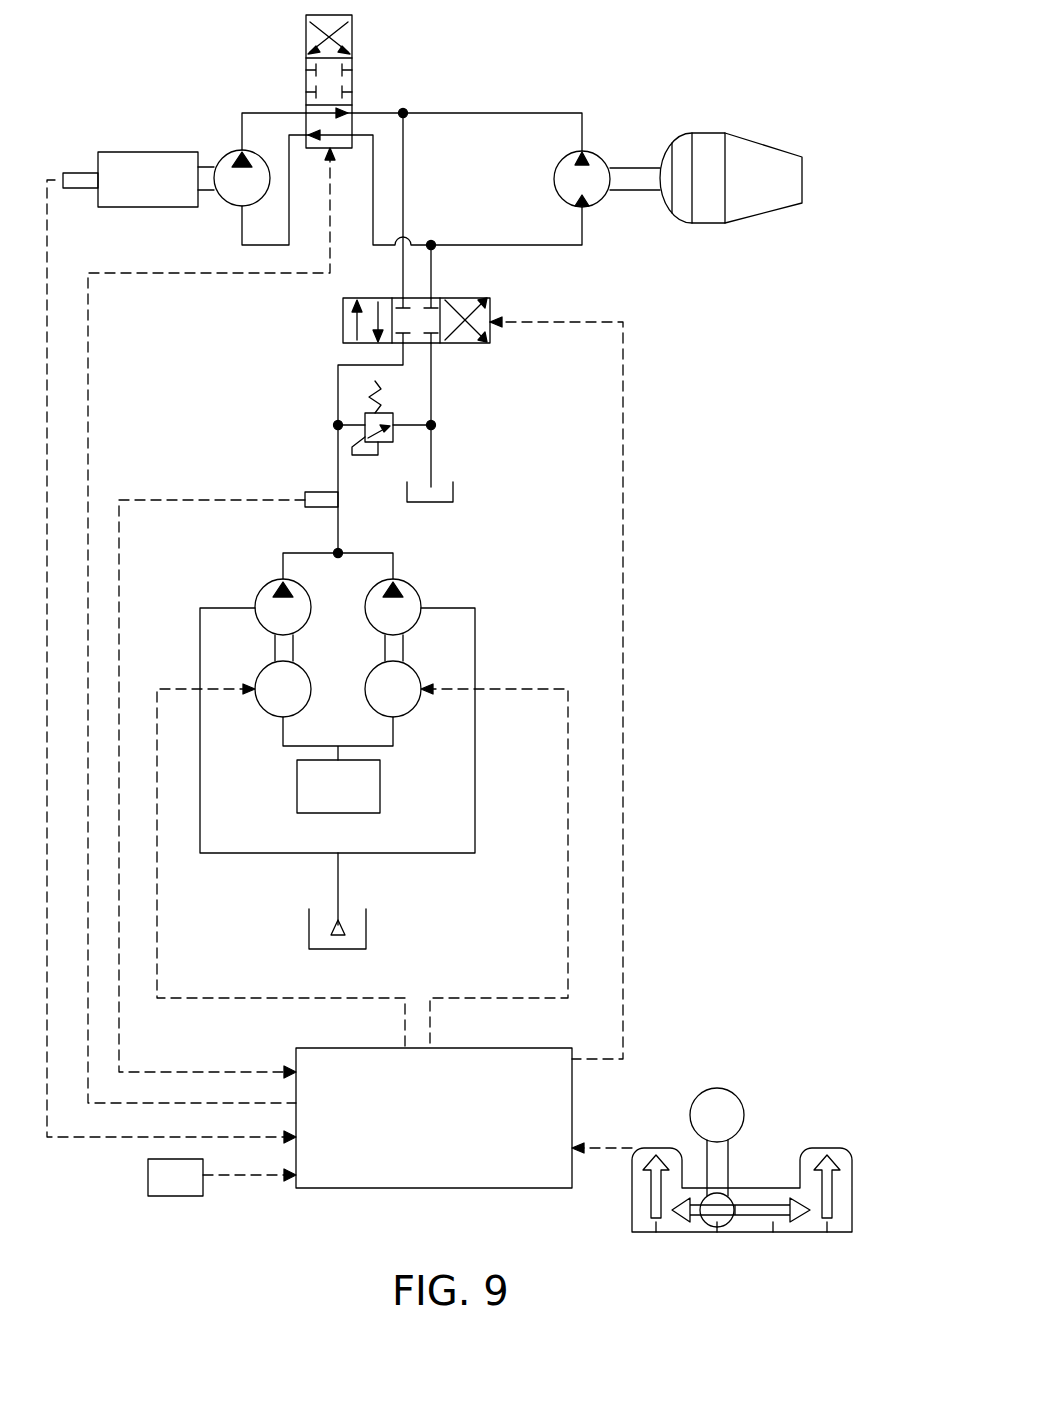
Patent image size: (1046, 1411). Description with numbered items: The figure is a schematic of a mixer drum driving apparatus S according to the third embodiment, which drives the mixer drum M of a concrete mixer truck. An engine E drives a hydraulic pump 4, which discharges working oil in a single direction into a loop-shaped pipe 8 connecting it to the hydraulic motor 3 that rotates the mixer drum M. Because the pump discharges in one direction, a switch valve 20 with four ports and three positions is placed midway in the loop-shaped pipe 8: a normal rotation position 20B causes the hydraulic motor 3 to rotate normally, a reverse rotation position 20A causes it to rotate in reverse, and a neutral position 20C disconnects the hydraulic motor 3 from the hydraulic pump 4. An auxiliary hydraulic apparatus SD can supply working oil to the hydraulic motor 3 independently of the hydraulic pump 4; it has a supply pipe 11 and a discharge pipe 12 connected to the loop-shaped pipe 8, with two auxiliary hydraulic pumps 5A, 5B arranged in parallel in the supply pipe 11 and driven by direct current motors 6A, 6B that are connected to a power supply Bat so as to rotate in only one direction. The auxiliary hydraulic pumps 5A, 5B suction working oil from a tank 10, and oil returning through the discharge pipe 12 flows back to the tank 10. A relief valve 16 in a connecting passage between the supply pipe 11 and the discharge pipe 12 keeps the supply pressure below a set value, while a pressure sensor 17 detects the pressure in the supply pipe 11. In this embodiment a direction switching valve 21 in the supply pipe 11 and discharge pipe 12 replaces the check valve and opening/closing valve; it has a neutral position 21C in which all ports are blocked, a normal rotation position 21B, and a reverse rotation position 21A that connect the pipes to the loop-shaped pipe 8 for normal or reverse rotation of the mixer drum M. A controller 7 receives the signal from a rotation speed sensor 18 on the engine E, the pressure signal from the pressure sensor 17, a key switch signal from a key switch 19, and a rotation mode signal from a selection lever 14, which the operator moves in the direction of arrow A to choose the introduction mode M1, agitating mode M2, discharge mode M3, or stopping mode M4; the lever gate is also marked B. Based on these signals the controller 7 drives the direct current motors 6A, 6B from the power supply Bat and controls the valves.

The rotation speed sensor 18 is at (83, 165).
The engine E is at (152, 152).
The hydraulic pump 4 is at (223, 205).
The mixer drum driving apparatus S is at (210, 95).
The loop-shaped pipe 8 is at (520, 113).
The switch valve 20 is at (387, 75).
The reverse rotation position 20A is at (352, 36).
The normal rotation position 20B is at (352, 120).
The neutral position 20C is at (352, 80).
The hydraulic motor 3 is at (595, 168).
The mixer drum M is at (755, 135).
The direction switching valve 21 is at (414, 321).
The reverse rotation position 21A is at (485, 343).
The normal rotation position 21B is at (343, 330).
The neutral position 21C is at (420, 343).
The supply pipe 11 is at (338, 400).
The discharge pipe 12 is at (431, 408).
The relief valve 16 is at (385, 413).
The tank 10 is at (453, 495).
The pressure sensor 17 is at (305, 495).
The auxiliary hydraulic apparatus SD is at (260, 418).
The auxiliary hydraulic pump 5A is at (263, 590).
The auxiliary hydraulic pump 5B is at (416, 594).
The direct current motor 6A is at (306, 676).
The direct current motor 6B is at (418, 678).
The power supply Bat is at (380, 790).
The controller 7 is at (432, 1195).
The key switch 19 is at (166, 1197).
The selection lever 14 is at (740, 1102).
The arrow A is at (767, 1208).
The lever direction B is at (652, 1196).
The introduction mode M1 is at (655, 1241).
The agitating mode M2 is at (716, 1241).
The discharge mode M3 is at (826, 1241).
The stopping mode M4 is at (772, 1241).